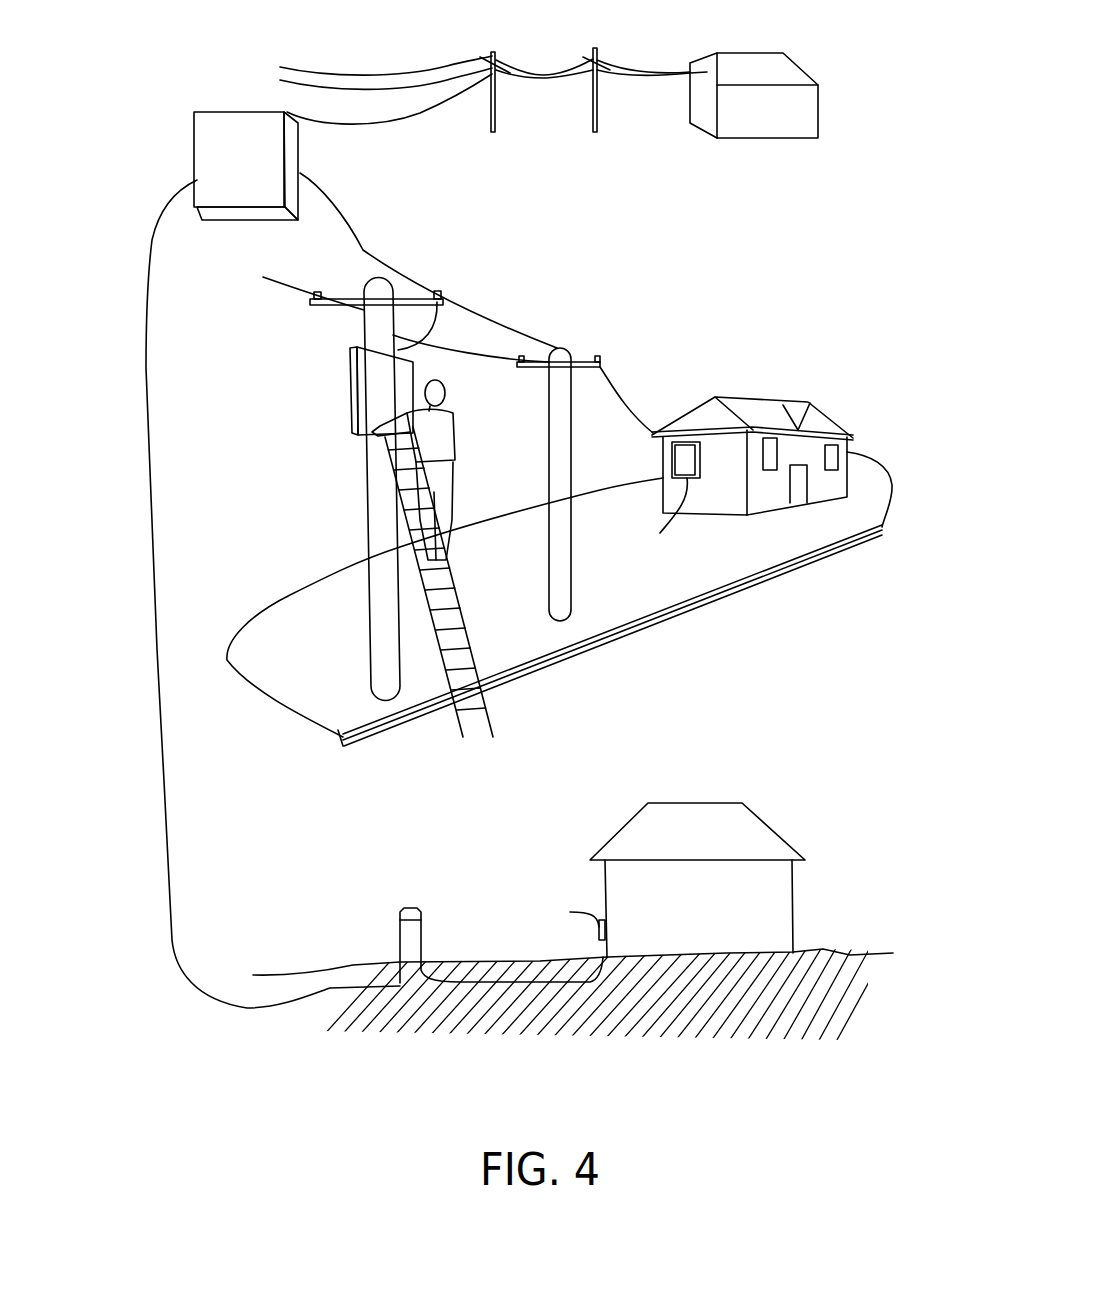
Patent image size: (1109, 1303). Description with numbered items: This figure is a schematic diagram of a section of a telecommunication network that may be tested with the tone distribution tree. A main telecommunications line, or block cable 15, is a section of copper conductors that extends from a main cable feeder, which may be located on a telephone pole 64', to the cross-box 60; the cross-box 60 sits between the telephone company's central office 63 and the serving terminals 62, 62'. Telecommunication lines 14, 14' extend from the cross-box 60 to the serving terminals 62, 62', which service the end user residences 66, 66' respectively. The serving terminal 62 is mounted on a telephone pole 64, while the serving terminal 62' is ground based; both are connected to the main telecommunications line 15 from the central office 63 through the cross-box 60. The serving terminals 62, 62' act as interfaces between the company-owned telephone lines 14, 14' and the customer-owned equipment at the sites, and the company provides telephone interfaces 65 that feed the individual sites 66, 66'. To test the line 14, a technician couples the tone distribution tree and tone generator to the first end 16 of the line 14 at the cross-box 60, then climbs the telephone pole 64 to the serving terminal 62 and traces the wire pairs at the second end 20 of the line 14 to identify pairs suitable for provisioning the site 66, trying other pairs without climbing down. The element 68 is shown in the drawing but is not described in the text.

The telecommunication line 14 is at (559, 459).
The telecommunication line 14' is at (236, 594).
The main telecommunications line (block cable) 15 is at (423, 115).
The first end 16 is at (304, 165).
The second end 20 is at (427, 356).
The cross-box 60 is at (210, 113).
The serving terminal 62 is at (327, 391).
The serving terminal 62' is at (463, 933).
The central office 63 is at (785, 63).
The telephone pole 64 is at (441, 489).
The telephone pole 64' is at (544, 90).
The telephone interface 65 is at (603, 709).
The end user site (residence) 66 is at (752, 434).
The end user site (residence) 66' is at (697, 850).
The drop wire 68 is at (533, 332).